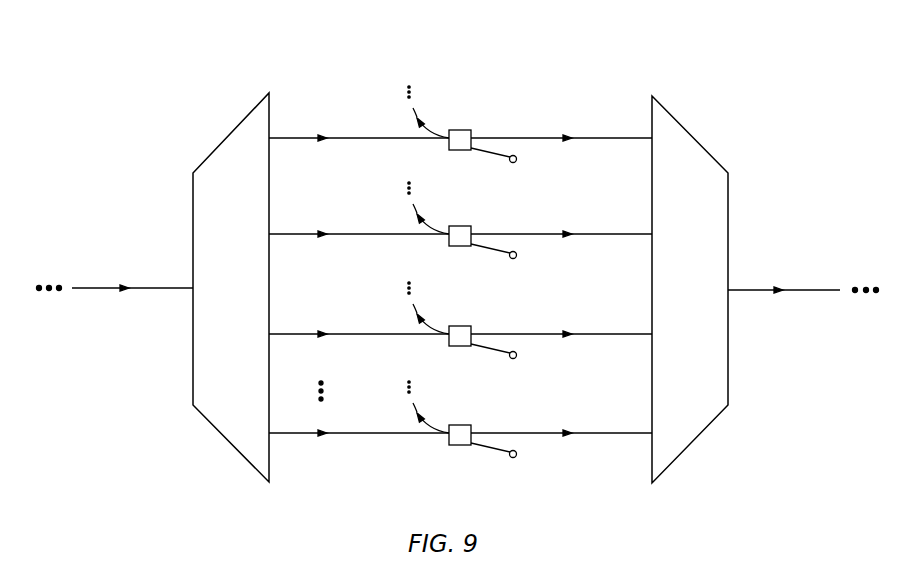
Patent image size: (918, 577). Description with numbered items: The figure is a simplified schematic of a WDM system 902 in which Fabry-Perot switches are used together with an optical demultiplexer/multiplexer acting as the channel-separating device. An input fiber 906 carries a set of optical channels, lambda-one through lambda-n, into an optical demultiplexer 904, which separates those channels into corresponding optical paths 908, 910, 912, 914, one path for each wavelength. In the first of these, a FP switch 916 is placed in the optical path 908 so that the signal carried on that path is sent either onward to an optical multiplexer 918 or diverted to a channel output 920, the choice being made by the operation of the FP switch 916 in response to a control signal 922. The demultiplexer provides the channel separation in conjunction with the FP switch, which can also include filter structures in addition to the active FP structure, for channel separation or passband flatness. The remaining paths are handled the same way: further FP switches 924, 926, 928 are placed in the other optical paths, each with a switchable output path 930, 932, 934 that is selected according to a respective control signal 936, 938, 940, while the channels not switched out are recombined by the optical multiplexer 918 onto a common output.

The WDM system 902 is at (583, 72).
The optical demultiplexer 904 is at (257, 105).
The input fiber 906 is at (173, 287).
The optical path 908 is at (280, 137).
The optical path 910 is at (280, 233).
The optical path 912 is at (280, 333).
The optical path 914 is at (285, 435).
The FP switch 916 is at (461, 130).
The optical multiplexer 918 is at (678, 118).
The channel output 920 is at (415, 112).
The control signal 922 is at (500, 157).
The FP switch 924 is at (461, 226).
The FP switch 926 is at (461, 326).
The FP switch 928 is at (461, 425).
The switchable output path 930 is at (415, 208).
The switchable output path 932 is at (415, 308).
The switchable output path 934 is at (415, 407).
The control signal 936 is at (500, 253).
The control signal 938 is at (500, 353).
The control signal 940 is at (500, 452).